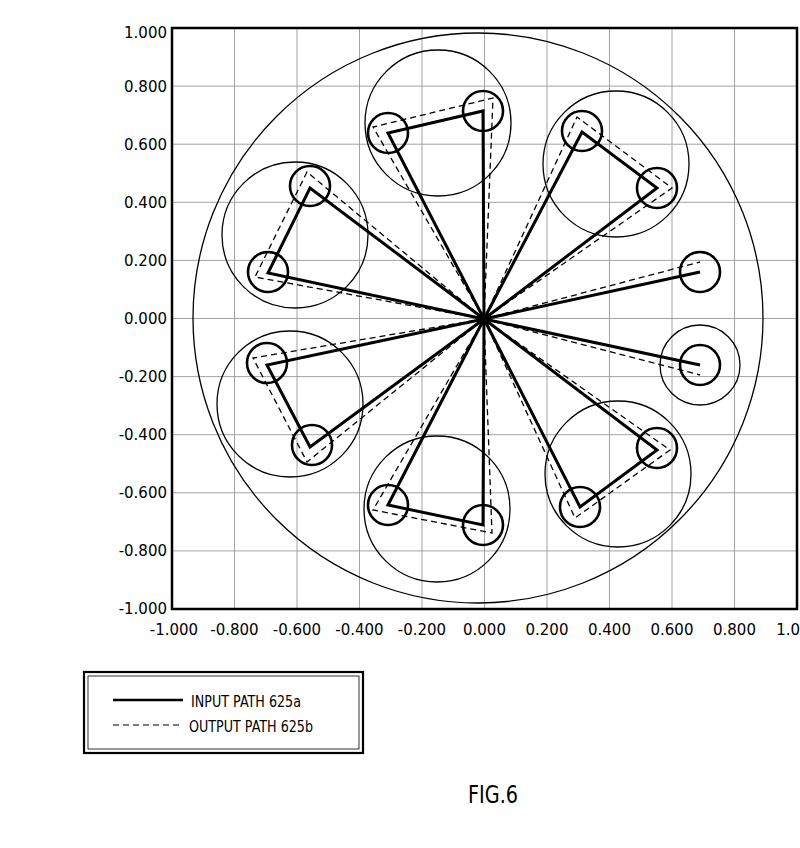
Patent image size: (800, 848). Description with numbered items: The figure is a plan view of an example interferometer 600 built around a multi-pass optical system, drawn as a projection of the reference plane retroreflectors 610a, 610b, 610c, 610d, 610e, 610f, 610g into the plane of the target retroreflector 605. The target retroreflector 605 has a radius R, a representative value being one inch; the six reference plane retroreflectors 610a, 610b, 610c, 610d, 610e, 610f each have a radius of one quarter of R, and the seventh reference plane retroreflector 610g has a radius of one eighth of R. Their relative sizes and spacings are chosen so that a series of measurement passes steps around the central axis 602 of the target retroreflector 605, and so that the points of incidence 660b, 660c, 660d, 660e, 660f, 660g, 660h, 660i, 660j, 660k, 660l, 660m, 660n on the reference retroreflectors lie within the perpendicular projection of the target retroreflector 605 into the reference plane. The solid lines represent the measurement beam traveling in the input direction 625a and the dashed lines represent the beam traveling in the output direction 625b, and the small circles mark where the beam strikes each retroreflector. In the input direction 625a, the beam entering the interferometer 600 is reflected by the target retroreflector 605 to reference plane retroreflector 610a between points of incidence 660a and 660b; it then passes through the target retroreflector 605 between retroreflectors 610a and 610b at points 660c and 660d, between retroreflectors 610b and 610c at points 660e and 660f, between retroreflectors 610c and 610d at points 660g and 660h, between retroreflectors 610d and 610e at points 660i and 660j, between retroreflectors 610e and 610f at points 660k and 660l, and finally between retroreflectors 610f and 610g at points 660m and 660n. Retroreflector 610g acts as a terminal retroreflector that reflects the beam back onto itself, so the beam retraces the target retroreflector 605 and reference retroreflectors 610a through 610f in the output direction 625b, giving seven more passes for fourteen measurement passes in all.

The interferometer 600 is at (79, 49).
The central axis 602 is at (460, 329).
The target retroreflector 605 is at (633, 86).
The reference plane retroreflector 610a is at (318, 476).
The reference plane retroreflector 610b is at (683, 140).
The reference plane retroreflector 610c is at (487, 563).
The reference plane retroreflector 610d is at (381, 72).
The reference plane retroreflector 610e is at (688, 501).
The reference plane retroreflector 610f is at (220, 245).
The reference plane retroreflector 610g is at (741, 365).
The input direction 625a is at (622, 290).
The output direction 625b is at (406, 392).
The point of incidence 660a is at (690, 293).
The point of incidence 660b is at (248, 383).
The point of incidence 660c is at (292, 448).
The point of incidence 660d is at (660, 207).
The point of incidence 660e is at (562, 132).
The point of incidence 660f is at (380, 526).
The point of incidence 660g is at (507, 512).
The point of incidence 660h is at (463, 99).
The point of incidence 660i is at (377, 127).
The point of incidence 660j is at (603, 511).
The point of incidence 660k is at (668, 432).
The point of incidence 660l is at (292, 183).
The point of incidence 660m is at (248, 273).
The point of incidence 660n is at (687, 350).